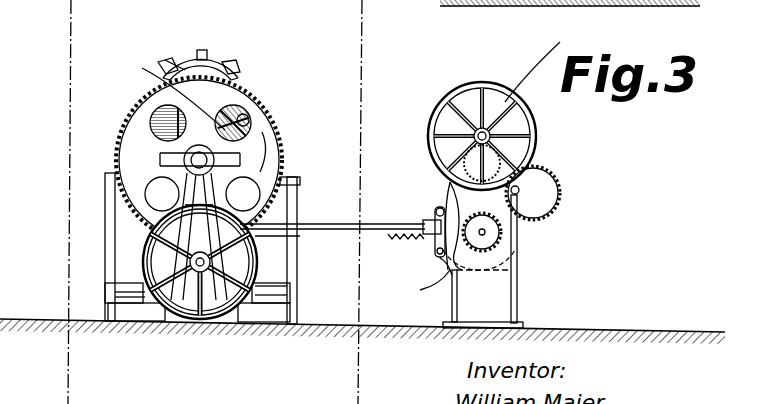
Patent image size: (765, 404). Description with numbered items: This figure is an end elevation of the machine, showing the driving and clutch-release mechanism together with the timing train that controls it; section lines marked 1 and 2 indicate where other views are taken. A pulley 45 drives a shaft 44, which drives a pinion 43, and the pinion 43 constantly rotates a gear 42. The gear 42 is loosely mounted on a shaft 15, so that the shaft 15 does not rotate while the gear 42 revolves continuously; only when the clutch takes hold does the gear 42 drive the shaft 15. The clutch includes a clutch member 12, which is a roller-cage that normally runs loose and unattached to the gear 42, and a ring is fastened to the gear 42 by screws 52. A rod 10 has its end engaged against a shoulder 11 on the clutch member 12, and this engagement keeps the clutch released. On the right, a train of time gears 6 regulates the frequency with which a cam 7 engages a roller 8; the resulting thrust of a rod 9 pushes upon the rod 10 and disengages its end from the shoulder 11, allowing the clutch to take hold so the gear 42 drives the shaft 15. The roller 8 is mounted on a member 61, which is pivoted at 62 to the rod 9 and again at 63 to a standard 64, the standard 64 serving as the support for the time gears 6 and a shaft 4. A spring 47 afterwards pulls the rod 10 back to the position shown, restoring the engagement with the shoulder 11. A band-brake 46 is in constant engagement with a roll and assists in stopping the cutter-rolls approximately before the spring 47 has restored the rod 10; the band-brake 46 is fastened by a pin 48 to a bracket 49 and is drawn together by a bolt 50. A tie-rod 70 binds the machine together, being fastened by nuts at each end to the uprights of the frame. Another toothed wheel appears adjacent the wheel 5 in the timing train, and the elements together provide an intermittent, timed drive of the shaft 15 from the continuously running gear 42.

The section line 1 is at (328, 33).
The section line 2 is at (30, 15).
The shaft 4 is at (542, 61).
The fly wheel 5 is at (483, 82).
The time gears 6 is at (445, 116).
The cam 7 is at (448, 200).
The roller 8 is at (436, 210).
The rod 9 is at (310, 224).
The rod 10 is at (184, 160).
The shoulder 11 is at (160, 158).
The clutch member 12 is at (162, 87).
The shaft 15 is at (233, 162).
The gear 42 is at (240, 115).
The pinion 43 is at (200, 275).
The shaft 44 is at (262, 306).
The pulley 45 is at (262, 265).
The band-brake 46 is at (180, 65).
The spring 47 is at (400, 238).
The pin 48 is at (266, 136).
The bracket 49 is at (152, 112).
The bolt 50 is at (249, 118).
The screws 52 is at (183, 70).
The member 61 is at (428, 224).
The pivot 62 is at (440, 256).
The pivot 63 is at (429, 288).
The standard 64 is at (483, 261).
The tie-rod 70 is at (207, 54).